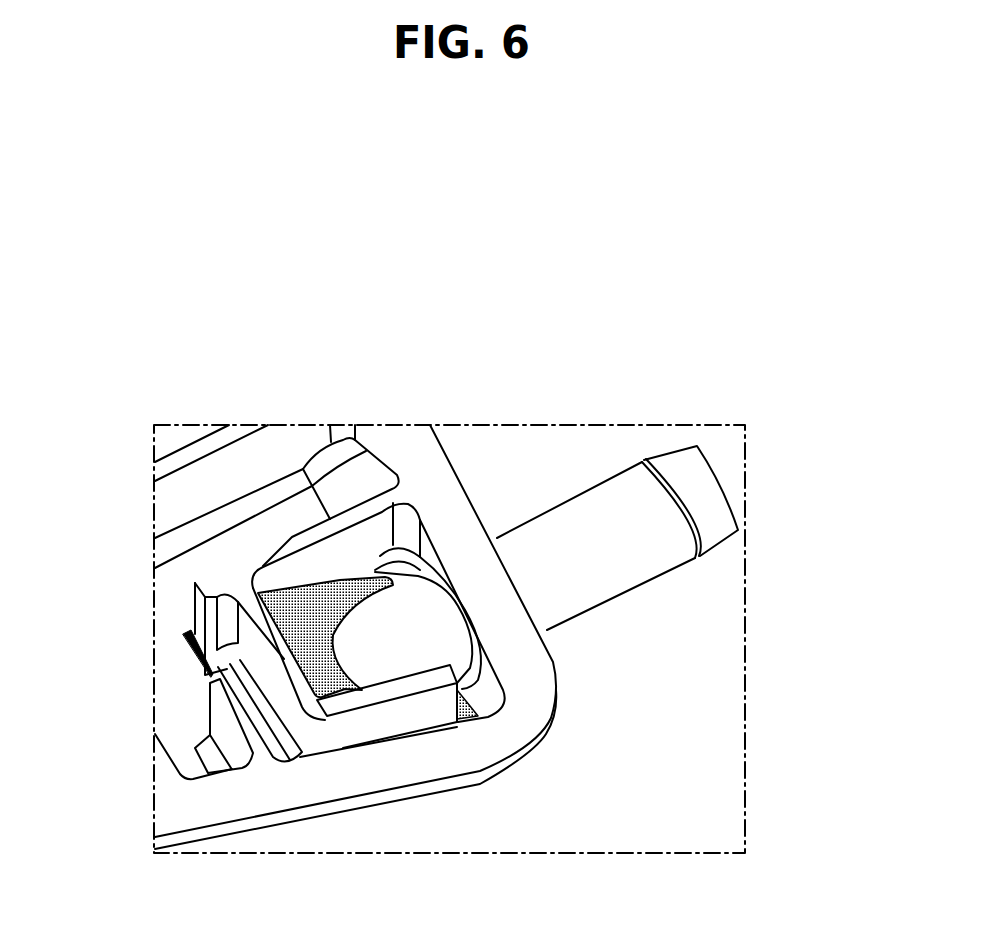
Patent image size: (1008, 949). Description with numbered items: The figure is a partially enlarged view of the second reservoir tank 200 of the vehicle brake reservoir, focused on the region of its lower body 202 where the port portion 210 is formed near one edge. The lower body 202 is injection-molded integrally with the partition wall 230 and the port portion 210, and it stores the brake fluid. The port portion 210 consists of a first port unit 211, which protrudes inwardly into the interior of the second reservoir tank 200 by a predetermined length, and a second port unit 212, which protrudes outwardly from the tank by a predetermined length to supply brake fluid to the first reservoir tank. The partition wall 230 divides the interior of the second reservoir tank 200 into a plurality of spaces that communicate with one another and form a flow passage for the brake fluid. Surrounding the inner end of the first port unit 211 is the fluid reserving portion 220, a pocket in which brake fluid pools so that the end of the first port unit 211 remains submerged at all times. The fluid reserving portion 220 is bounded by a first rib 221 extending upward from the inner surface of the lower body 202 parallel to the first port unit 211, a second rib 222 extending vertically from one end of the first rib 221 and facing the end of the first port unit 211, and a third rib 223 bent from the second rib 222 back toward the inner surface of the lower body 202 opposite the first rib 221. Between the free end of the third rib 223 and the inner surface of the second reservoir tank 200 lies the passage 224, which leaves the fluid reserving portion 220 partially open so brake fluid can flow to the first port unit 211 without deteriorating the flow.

The second reservoir tank 200 is at (792, 266).
The lower body 202 is at (317, 812).
The port portion 210 is at (826, 576).
The first port unit 211 is at (433, 628).
The second port unit 212 is at (705, 499).
The fluid reserving portion 220 is at (288, 610).
The first rib 221 is at (363, 517).
The second rib 222 is at (290, 652).
The third rib 223 is at (395, 722).
The passage 224 is at (467, 717).
The partition wall 230 is at (277, 497).